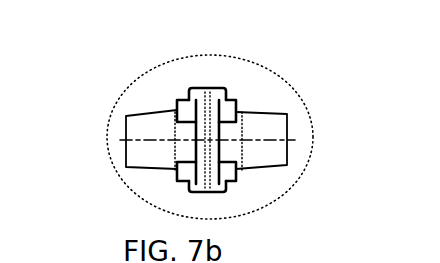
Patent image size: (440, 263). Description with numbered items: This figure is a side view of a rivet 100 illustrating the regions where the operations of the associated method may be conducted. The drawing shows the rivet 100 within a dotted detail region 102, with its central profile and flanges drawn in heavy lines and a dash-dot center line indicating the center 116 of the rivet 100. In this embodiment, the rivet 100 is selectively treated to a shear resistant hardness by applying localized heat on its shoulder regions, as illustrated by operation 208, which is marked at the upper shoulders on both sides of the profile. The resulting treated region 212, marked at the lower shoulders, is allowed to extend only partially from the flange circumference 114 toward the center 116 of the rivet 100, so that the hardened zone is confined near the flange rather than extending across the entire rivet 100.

The rivet 100 is at (284, 124).
The detail region 102 is at (248, 62).
The flange circumference 114 is at (209, 87).
The center 116 is at (287, 139).
The operation 208 is at (176, 107).
The treated region 212 is at (237, 170).